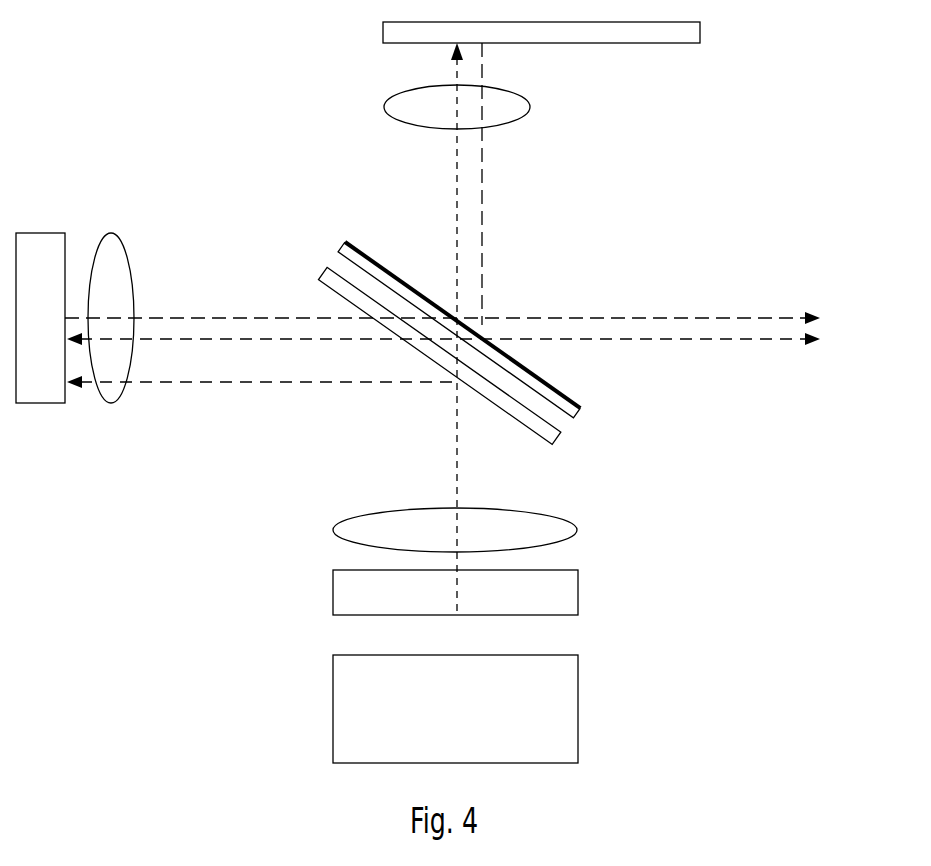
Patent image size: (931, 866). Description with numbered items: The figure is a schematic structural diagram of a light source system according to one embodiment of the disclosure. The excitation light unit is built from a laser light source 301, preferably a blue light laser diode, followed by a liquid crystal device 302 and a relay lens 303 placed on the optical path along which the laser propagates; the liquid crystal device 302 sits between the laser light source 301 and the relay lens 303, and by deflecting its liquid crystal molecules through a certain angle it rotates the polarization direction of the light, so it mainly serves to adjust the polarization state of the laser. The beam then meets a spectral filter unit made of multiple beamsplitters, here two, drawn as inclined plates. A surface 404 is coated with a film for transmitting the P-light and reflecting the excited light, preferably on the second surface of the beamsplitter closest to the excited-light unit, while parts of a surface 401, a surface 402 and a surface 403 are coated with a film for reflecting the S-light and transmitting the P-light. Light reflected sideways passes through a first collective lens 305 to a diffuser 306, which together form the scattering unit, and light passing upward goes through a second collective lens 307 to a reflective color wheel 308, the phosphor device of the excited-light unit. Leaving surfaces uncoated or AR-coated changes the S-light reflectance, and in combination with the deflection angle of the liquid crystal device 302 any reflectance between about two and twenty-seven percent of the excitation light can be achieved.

The laser light source 301 is at (578, 698).
The liquid crystal device 302 is at (578, 615).
The relay lens 303 is at (553, 548).
The first collective lens 305 is at (113, 403).
The diffuser 306 is at (43, 408).
The second collective lens 307 is at (530, 108).
The reflective color wheel 308 is at (653, 45).
The surface 401 is at (507, 413).
The surface 402 is at (333, 257).
The surface 403 is at (577, 420).
The surface 404 is at (382, 253).